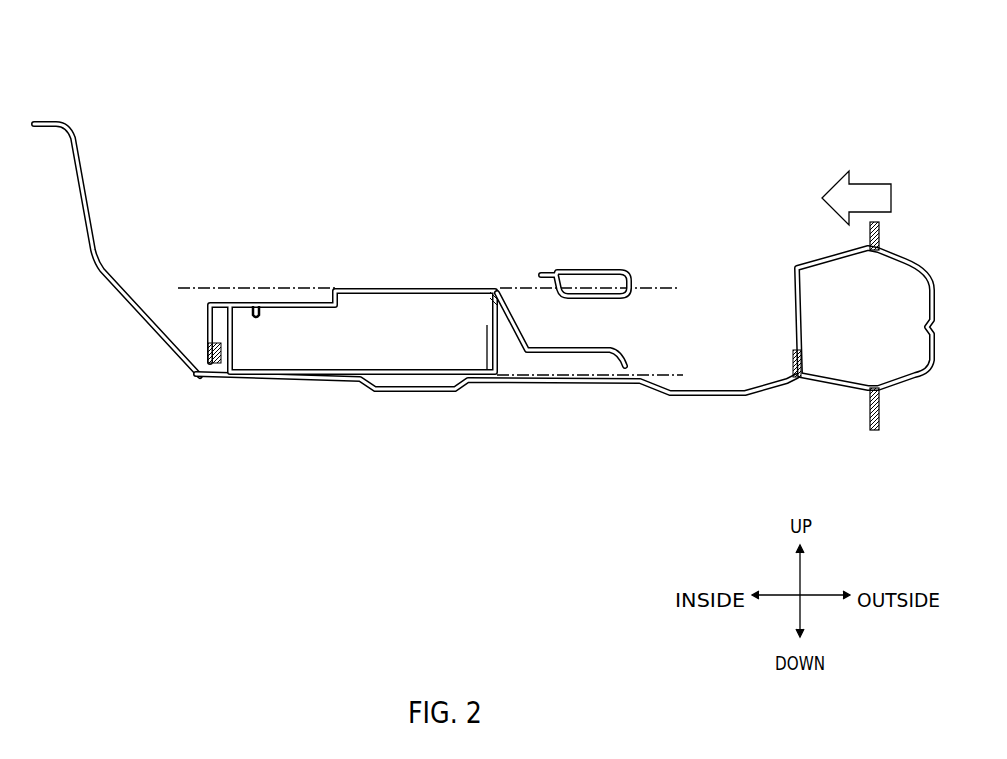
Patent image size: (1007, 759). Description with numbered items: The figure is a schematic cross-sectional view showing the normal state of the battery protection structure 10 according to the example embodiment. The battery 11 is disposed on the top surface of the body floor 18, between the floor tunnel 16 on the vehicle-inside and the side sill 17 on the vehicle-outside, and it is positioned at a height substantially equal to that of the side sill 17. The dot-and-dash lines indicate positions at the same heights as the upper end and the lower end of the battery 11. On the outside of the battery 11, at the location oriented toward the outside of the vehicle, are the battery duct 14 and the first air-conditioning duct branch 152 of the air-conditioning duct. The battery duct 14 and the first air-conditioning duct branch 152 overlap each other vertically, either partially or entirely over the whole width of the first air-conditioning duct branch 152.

The battery protection structure 10 is at (522, 68).
The battery 11 is at (362, 287).
The battery duct 14 is at (567, 385).
The first air-conditioning duct branch 152 is at (585, 270).
The floor tunnel 16 is at (36, 120).
The side sill 17 is at (873, 430).
The body floor 18 is at (400, 400).